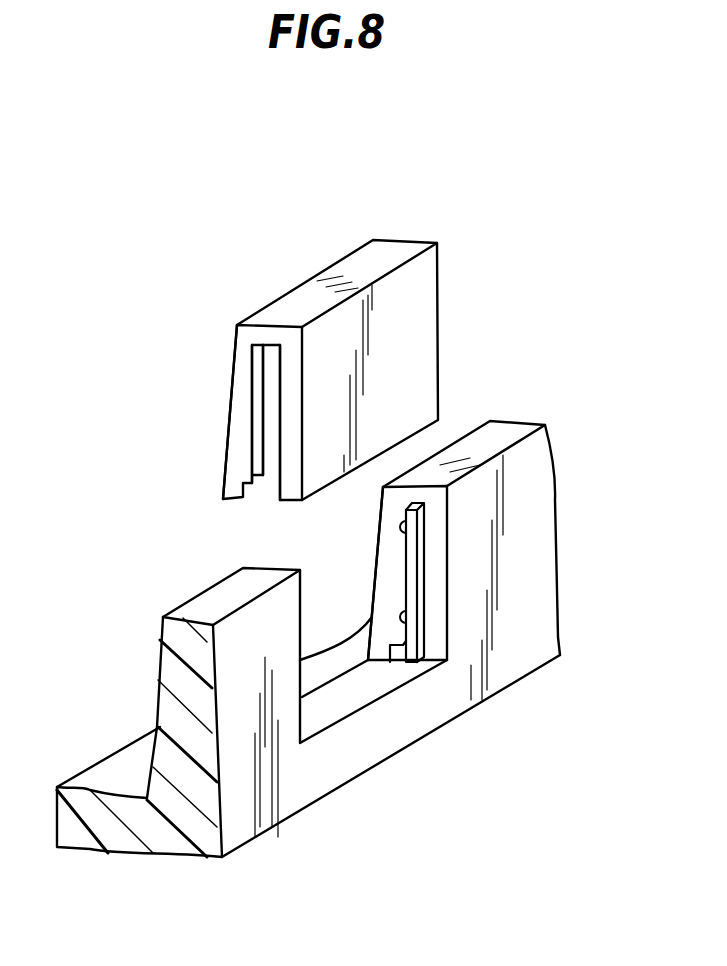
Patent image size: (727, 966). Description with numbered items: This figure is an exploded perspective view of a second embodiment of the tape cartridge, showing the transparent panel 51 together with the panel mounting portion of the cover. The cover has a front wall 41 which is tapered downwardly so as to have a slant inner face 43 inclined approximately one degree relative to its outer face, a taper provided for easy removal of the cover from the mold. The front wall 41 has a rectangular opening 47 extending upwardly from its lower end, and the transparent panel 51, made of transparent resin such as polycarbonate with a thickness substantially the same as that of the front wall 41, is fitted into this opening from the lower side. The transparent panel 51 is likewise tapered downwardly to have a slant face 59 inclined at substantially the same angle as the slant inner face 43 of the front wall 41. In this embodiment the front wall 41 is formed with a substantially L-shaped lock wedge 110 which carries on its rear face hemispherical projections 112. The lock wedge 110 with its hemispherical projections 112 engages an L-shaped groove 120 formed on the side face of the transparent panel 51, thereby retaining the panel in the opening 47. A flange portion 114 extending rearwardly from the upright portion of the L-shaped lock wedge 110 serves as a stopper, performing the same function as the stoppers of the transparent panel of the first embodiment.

The front wall 41 is at (537, 527).
The slant inner face 43 is at (381, 502).
The rectangular opening 47 is at (300, 620).
The transparent panel 51 is at (316, 256).
The slant face 59 is at (235, 357).
The lock wedge 110 is at (405, 573).
The hemispherical projection 112 is at (401, 528).
The flange portion 114 is at (404, 655).
The L-shaped groove 120 is at (270, 427).